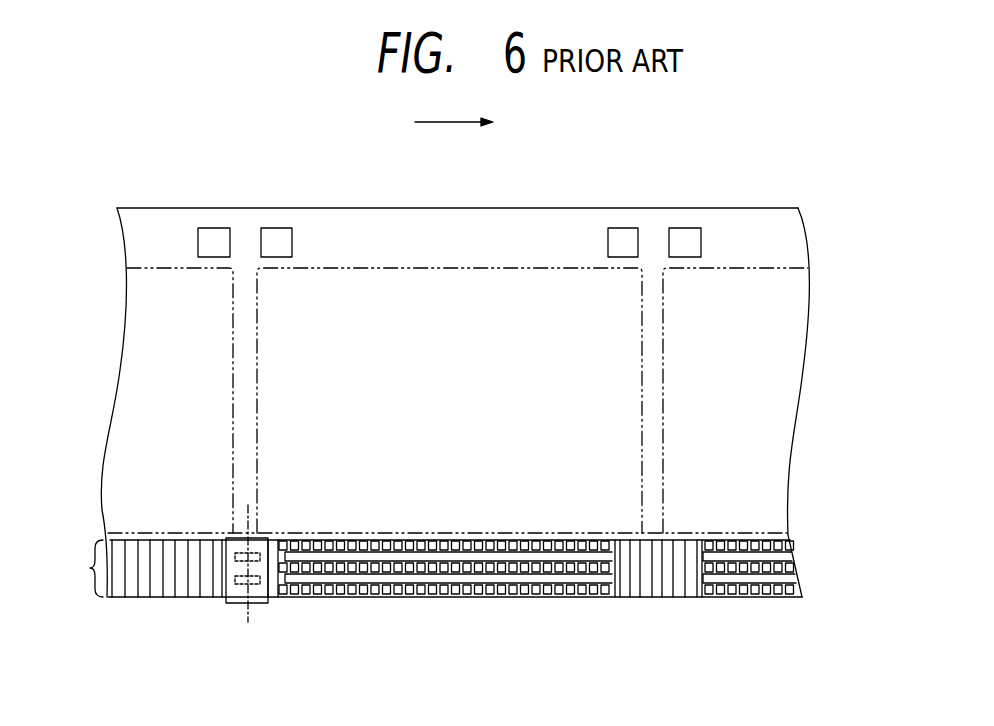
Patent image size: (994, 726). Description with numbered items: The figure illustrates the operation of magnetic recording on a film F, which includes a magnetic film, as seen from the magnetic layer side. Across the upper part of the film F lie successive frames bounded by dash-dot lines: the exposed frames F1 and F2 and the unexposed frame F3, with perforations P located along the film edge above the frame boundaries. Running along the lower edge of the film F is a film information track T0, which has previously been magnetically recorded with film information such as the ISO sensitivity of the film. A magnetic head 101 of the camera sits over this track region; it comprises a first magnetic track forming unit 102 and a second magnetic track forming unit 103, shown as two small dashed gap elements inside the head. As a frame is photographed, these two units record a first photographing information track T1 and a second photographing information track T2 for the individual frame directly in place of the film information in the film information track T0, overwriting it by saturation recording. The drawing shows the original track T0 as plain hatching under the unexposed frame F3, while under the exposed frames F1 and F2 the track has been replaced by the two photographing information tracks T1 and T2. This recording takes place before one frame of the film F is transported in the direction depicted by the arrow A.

The arrow A is at (454, 111).
The film F is at (437, 212).
The exposed frame F1 is at (727, 285).
The exposed frame F2 is at (335, 287).
The unexposed frame F3 is at (150, 288).
The perforation P is at (278, 237).
The film information track T0 is at (429, 568).
The first photographing information track T1 is at (452, 580).
The second photographing information track T2 is at (543, 555).
The magnetic head 101 is at (232, 601).
The first magnetic track forming unit 102 is at (263, 605).
The second magnetic track forming unit 103 is at (258, 558).